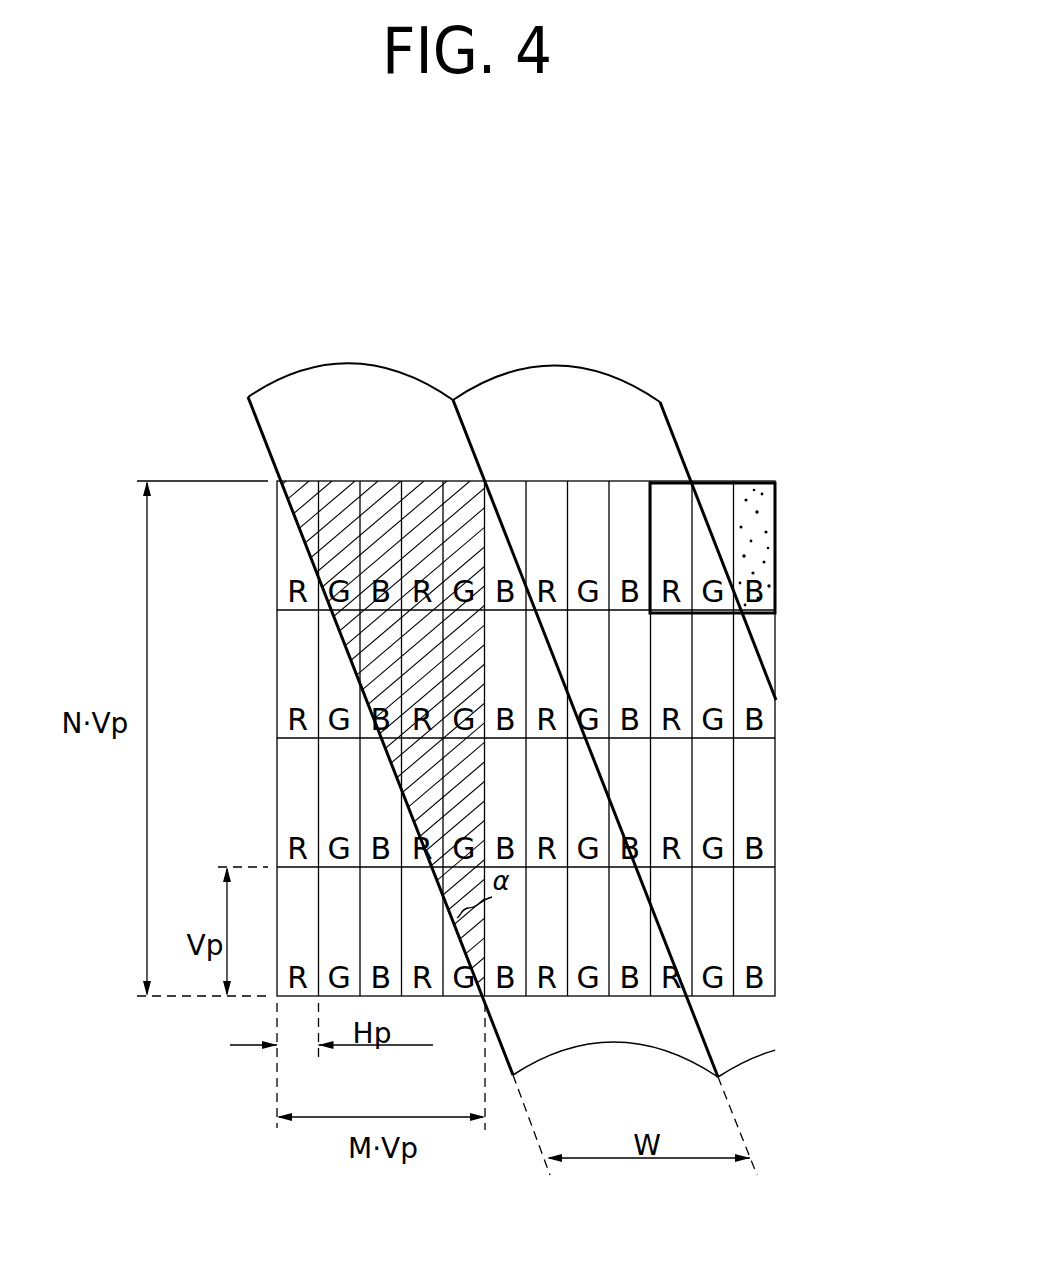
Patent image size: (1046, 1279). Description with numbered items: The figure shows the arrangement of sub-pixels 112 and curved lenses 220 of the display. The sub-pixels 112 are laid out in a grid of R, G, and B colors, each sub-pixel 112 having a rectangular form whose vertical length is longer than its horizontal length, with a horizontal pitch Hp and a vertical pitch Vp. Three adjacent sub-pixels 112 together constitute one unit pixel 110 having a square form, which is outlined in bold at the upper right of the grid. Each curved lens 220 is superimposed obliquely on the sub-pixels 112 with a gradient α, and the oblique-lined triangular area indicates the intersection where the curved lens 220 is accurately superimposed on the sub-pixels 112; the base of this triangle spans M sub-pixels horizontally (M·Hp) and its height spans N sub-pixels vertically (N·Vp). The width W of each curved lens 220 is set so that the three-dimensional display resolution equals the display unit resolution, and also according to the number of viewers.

The curved lens 220 is at (352, 382).
The unit pixel 110 is at (776, 586).
The sub-pixel 112 is at (764, 528).